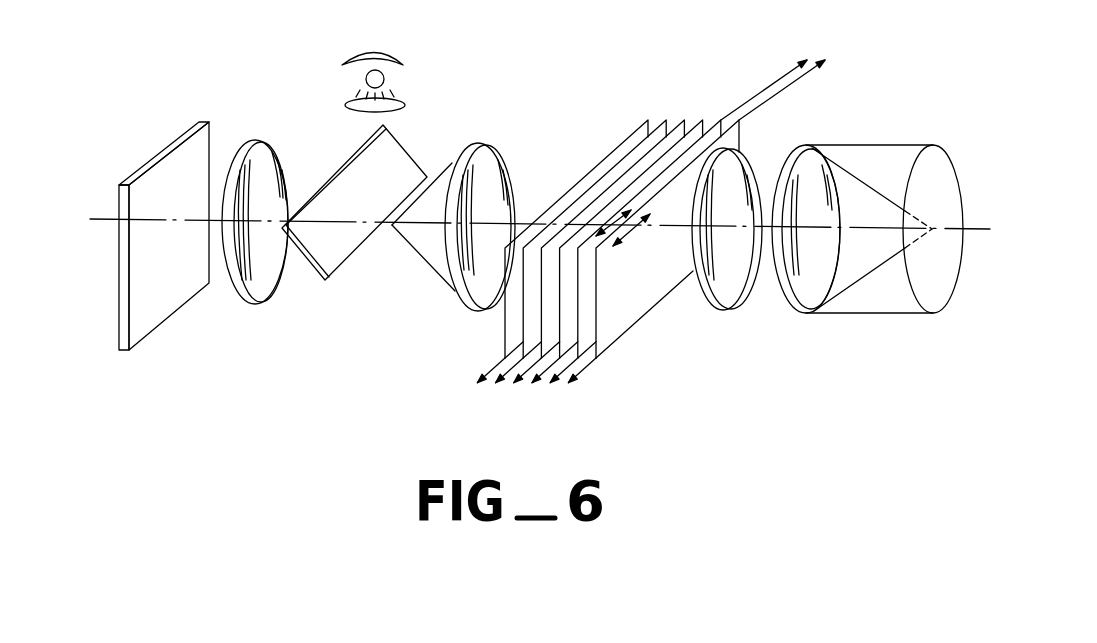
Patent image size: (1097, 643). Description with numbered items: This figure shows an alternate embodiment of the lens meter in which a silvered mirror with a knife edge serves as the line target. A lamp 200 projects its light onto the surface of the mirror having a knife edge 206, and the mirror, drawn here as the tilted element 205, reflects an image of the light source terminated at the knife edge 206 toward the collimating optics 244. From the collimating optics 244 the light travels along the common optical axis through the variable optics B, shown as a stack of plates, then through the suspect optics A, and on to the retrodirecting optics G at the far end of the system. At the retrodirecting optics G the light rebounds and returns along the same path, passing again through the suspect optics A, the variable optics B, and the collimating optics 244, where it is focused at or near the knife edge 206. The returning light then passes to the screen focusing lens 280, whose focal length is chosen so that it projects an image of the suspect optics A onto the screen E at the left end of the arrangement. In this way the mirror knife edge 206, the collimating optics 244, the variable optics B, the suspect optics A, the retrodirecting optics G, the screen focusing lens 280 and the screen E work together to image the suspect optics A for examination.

The lamp 200 is at (398, 82).
The beam splitter 205 is at (388, 165).
The knife edge 206 is at (368, 232).
The collimating optics 244 is at (495, 172).
The screen focusing lens 280 is at (258, 300).
The screen E is at (150, 333).
The variable optics B is at (678, 115).
The suspect optics A is at (727, 313).
The retrodirecting optics G is at (850, 313).